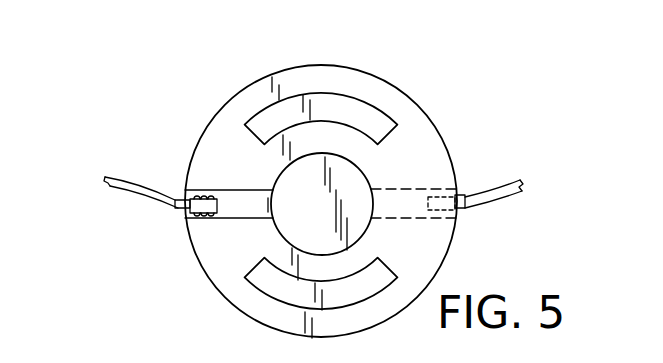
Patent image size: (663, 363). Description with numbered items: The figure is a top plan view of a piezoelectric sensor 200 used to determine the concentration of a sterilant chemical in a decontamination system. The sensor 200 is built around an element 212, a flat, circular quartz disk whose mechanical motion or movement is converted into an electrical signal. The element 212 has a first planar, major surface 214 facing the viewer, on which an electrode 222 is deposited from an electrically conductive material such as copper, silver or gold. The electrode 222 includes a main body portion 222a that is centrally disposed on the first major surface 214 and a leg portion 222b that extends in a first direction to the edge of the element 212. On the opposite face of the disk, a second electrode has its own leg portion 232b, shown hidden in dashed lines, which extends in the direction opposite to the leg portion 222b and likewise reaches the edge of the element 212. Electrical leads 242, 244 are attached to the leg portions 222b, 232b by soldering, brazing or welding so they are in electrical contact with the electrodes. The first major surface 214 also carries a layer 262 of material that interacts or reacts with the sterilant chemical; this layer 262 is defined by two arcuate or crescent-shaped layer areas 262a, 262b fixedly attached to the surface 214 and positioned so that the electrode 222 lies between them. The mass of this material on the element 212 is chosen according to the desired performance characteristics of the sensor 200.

The sensor 200 is at (487, 95).
The element 212 is at (424, 104).
The first planar, major surface 214 is at (430, 148).
The electrode 222 is at (275, 233).
The main body portion 222a is at (285, 182).
The leg portion 222b is at (238, 210).
The leg portion 232b is at (405, 215).
The electrical lead 242 is at (130, 195).
The electrical lead 244 is at (490, 197).
The layer 262 is at (350, 93).
The arcuate layer area 262a is at (320, 107).
The arcuate layer area 262b is at (267, 288).